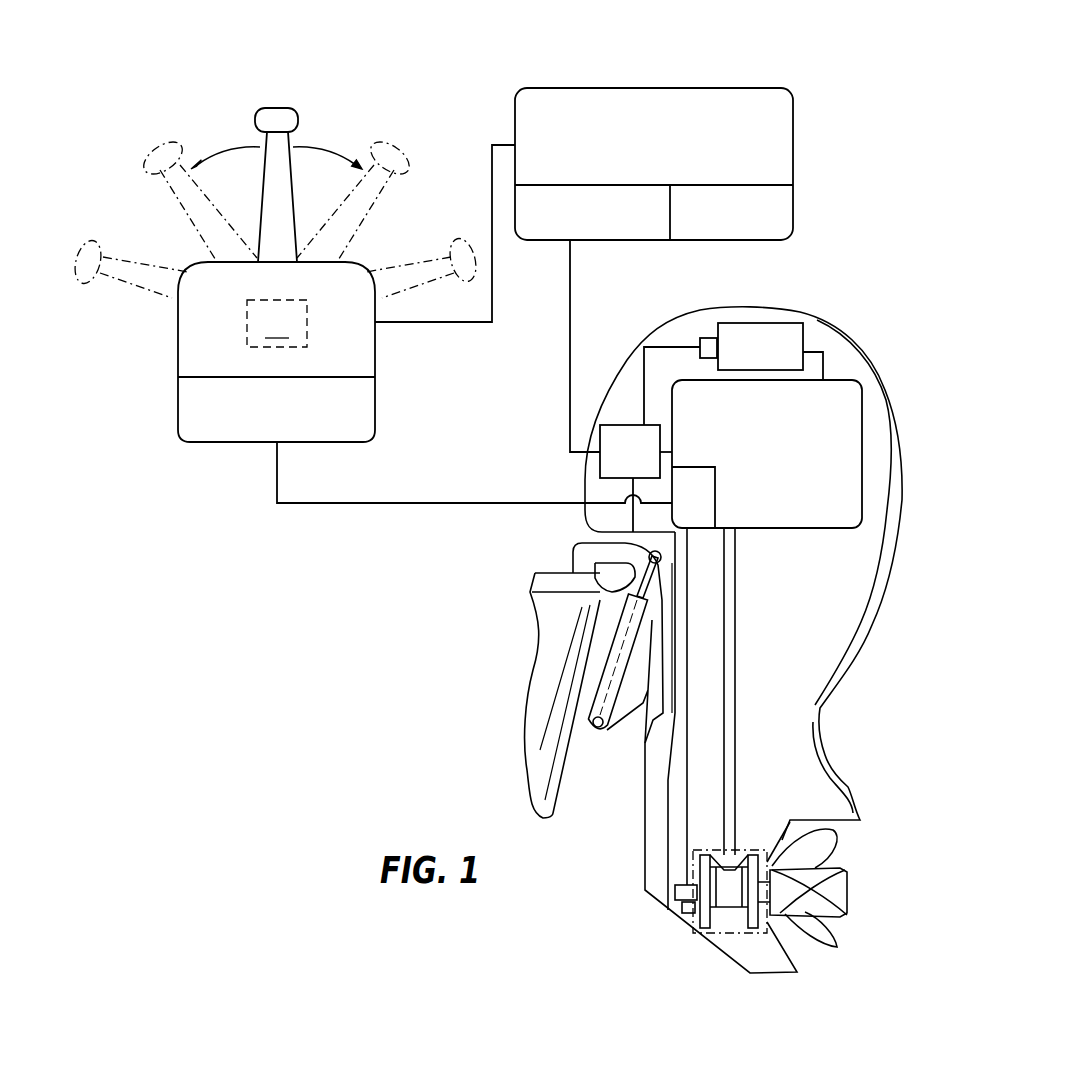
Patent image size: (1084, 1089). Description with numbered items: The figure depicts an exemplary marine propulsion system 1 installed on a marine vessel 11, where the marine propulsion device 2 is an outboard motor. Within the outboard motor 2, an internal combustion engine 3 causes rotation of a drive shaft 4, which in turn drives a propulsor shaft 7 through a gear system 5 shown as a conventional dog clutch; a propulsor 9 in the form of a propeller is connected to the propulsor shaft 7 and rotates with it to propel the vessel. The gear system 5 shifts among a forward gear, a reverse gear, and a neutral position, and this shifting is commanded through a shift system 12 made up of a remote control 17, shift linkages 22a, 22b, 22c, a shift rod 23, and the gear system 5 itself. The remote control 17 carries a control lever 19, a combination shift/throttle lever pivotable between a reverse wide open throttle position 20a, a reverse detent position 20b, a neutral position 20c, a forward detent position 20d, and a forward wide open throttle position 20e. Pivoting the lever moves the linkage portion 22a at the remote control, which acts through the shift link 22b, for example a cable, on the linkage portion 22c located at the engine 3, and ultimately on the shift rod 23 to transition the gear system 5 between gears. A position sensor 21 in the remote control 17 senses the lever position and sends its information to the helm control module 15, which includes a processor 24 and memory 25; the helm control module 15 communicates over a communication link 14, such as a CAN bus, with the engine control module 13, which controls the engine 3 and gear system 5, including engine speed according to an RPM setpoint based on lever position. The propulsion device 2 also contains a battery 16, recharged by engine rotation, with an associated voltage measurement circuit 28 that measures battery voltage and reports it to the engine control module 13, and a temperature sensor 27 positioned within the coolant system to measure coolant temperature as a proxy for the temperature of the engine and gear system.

The marine propulsion system 1 is at (829, 43).
The marine propulsion device 2 is at (903, 477).
The internal combustion engine 3 is at (847, 415).
The drive shaft 4 is at (732, 623).
The gear system 5 is at (728, 940).
The propulsor shaft 7 is at (780, 893).
The propulsor 9 is at (827, 850).
The marine vessel 11 is at (572, 742).
The shift system 12 is at (289, 547).
The engine control module (ECM) 13 is at (598, 470).
The communication link 14 is at (568, 380).
The helm control module (HCM) 15 is at (630, 88).
The battery 16 is at (785, 323).
The remote control 17 is at (355, 104).
The control lever 19 is at (277, 108).
The reverse wide open throttle position 20a is at (100, 240).
The reverse detent position 20b is at (155, 147).
The neutral position 20c is at (298, 112).
The forward detent position 20d is at (397, 147).
The forward wide open throttle position 20e is at (465, 240).
The position sensor 21 is at (277, 323).
The shift linkage portion 22a is at (192, 425).
The shift link 22b is at (398, 503).
The shift linkage portion 22c is at (715, 488).
The shift rod 23 is at (682, 821).
The processor 24 is at (603, 242).
The memory 25 is at (723, 242).
The temperature sensor 27 is at (688, 915).
The voltage measurement circuit 28 is at (708, 338).